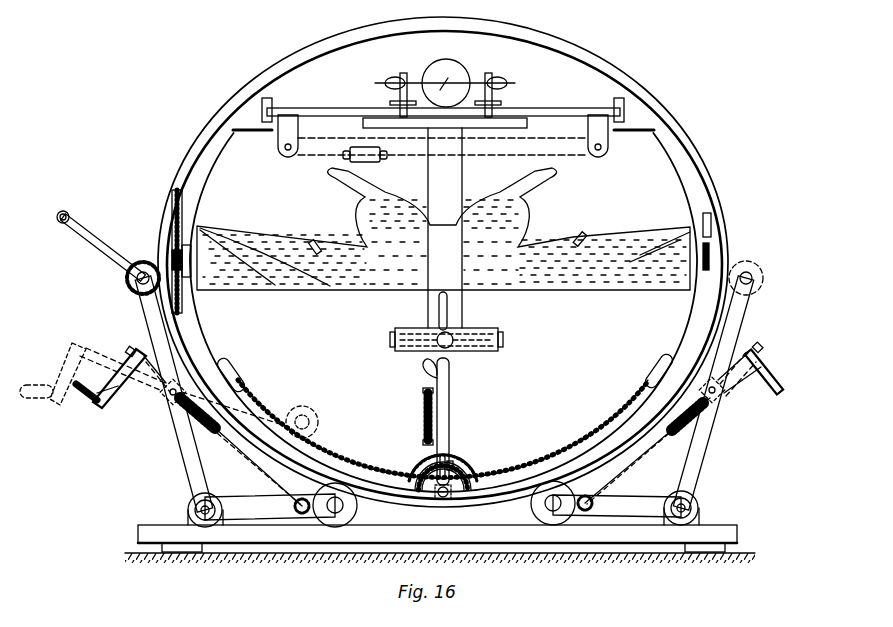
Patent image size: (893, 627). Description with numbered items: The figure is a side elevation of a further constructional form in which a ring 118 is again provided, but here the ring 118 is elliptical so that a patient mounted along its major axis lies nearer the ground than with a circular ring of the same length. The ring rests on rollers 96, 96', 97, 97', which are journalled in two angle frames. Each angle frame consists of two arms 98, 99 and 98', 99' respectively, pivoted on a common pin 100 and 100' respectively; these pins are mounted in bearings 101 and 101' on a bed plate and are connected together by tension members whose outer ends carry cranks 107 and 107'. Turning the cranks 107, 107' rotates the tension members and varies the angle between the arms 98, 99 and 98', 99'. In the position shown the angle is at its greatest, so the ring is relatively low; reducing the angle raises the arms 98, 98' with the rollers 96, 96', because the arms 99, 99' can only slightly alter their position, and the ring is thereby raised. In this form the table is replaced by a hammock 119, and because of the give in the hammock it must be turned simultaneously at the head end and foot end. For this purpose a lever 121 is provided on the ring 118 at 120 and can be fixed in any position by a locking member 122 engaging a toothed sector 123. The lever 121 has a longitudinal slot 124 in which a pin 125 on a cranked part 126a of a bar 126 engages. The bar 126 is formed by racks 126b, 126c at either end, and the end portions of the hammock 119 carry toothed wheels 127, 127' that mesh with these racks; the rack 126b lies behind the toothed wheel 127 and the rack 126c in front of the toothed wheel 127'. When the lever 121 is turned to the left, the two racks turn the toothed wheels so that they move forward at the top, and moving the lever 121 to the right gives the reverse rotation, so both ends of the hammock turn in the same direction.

The roller 96 is at (321, 492).
The roller 96' is at (553, 537).
The roller 97 is at (108, 253).
The roller 97' is at (751, 291).
The arm 98 is at (270, 542).
The arm 98' is at (617, 544).
The arm 99 is at (173, 394).
The arm 99' is at (713, 393).
The common pin 100 is at (169, 514).
The common pin 100' is at (709, 548).
The bearing 101 is at (177, 505).
The bearing 101' is at (710, 504).
The crank 107 is at (161, 412).
The crank 107' is at (684, 423).
The ring 118 is at (672, 125).
The hammock 119 is at (370, 291).
The pivot of lever on ring 120 is at (448, 498).
The lever 121 is at (449, 421).
The locking member 122 is at (425, 446).
The toothed sector 123 is at (465, 456).
The longitudinal slot 124 is at (456, 456).
The pin 125 is at (474, 469).
The bar 126 is at (588, 448).
The cranked part 126a is at (415, 462).
The rack 126b is at (176, 238).
The rack 126c is at (710, 229).
The toothed wheel 127 is at (150, 246).
The toothed wheel 127' is at (744, 242).